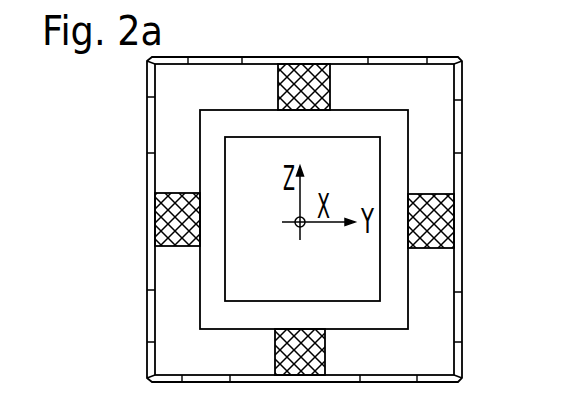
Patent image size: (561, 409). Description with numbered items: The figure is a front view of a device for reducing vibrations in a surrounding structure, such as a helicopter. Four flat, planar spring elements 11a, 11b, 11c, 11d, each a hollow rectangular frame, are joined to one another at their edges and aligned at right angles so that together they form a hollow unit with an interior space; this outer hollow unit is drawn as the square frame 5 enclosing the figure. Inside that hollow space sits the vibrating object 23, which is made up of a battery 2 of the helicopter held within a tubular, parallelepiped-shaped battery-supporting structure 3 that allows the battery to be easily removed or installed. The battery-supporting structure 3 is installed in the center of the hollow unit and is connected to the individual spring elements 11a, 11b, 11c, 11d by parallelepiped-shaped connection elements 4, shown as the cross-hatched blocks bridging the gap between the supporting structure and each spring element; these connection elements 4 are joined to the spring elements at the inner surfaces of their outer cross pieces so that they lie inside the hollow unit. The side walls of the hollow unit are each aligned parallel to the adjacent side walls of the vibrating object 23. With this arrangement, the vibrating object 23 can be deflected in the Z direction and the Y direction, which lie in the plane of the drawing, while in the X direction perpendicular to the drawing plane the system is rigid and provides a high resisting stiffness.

The battery 2 is at (368, 284).
The battery-supporting structure 3 is at (338, 128).
The connection element 4 is at (475, 198).
The outer frame 5 is at (465, 63).
The spring element 11a is at (293, 62).
The spring element 11b is at (462, 178).
The spring element 11c is at (297, 378).
The spring element 11d is at (150, 180).
The vibrating object 23 is at (193, 280).